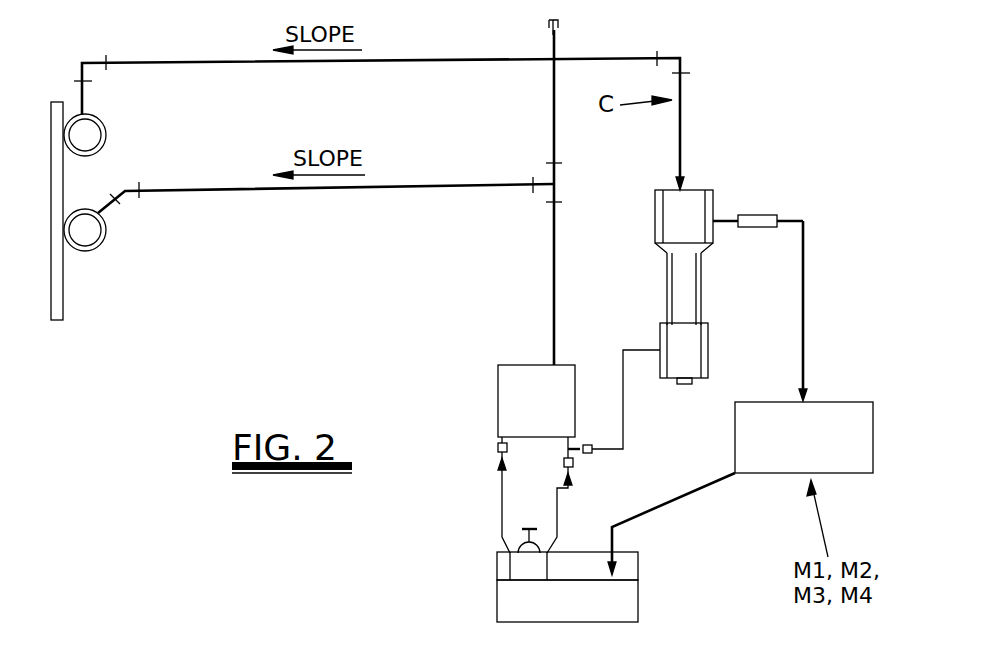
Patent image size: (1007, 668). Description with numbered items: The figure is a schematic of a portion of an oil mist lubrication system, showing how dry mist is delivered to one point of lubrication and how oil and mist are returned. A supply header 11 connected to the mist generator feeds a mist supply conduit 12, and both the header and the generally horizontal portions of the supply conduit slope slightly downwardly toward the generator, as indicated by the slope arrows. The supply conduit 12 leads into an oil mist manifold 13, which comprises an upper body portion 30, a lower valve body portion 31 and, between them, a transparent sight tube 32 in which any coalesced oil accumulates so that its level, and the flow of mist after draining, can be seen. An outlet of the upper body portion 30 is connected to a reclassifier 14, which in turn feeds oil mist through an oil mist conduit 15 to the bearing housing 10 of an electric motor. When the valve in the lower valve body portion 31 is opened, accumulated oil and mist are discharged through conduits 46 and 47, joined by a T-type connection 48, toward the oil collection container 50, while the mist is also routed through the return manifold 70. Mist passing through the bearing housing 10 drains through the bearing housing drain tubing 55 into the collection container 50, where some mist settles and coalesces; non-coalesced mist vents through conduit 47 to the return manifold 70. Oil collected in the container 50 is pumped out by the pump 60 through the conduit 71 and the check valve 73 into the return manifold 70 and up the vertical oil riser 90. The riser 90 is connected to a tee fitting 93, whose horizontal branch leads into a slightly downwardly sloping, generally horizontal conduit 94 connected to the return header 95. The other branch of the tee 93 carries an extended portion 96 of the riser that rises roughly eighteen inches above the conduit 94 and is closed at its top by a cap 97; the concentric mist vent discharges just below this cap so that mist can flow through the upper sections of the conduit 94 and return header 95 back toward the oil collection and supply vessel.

The bearing housing 10 is at (822, 456).
The supply header 11 is at (100, 122).
The mist supply conduit 12 is at (590, 58).
The oil mist manifold 13 is at (683, 287).
The reclassifier 14 is at (764, 218).
The oil mist conduit 15 is at (805, 315).
The upper body portion 30 is at (655, 230).
The lower valve body portion 31 is at (695, 355).
The transparent sight tube 32 is at (680, 297).
The conduit 46 is at (623, 420).
The conduit 47 is at (558, 514).
The T-type connection 48 is at (563, 462).
The oil collection container 50 is at (634, 615).
The bearing housing drain tubing 55 is at (697, 495).
The pump 60 is at (500, 569).
The return manifold 70 is at (532, 372).
The conduit 71 is at (500, 500).
The check valve 73 is at (497, 447).
The oil riser 90 is at (554, 286).
The tee fitting 93 is at (552, 192).
The conduit 94 is at (418, 188).
The return header 95 is at (105, 232).
The extended portion 96 is at (554, 103).
The cap 97 is at (549, 22).